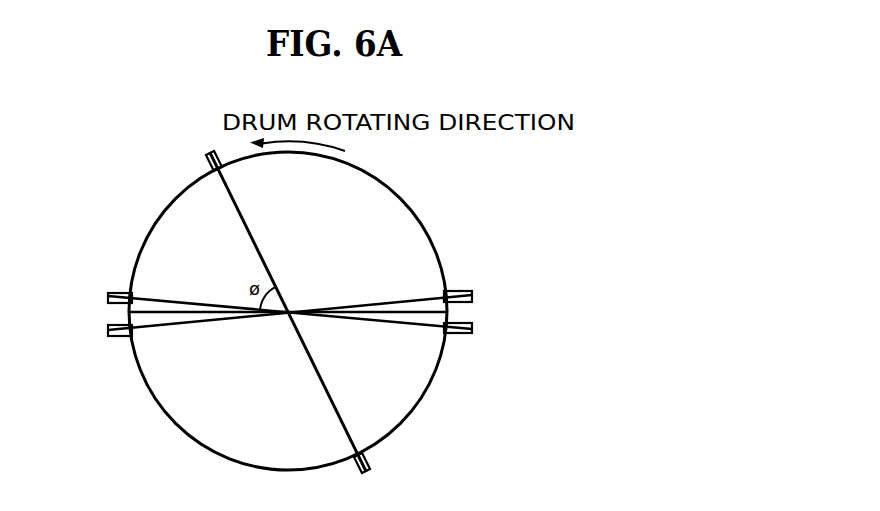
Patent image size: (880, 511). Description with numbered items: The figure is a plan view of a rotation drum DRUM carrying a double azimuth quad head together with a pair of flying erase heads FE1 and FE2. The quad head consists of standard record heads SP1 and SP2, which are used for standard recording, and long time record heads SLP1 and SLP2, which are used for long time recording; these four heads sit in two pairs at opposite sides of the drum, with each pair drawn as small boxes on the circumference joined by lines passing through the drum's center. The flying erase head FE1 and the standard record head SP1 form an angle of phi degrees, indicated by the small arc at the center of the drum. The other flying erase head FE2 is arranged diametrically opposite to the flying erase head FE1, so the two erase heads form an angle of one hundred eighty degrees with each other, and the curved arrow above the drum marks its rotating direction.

The rotation drum DRUM is at (395, 193).
The flying erase head FE1 is at (254, 311).
The flying erase head FE2 is at (388, 470).
The standard record head SP1 is at (263, 307).
The standard record head SP2 is at (482, 329).
The long time record head SLP1 is at (488, 295).
The long time record head SLP2 is at (256, 319).